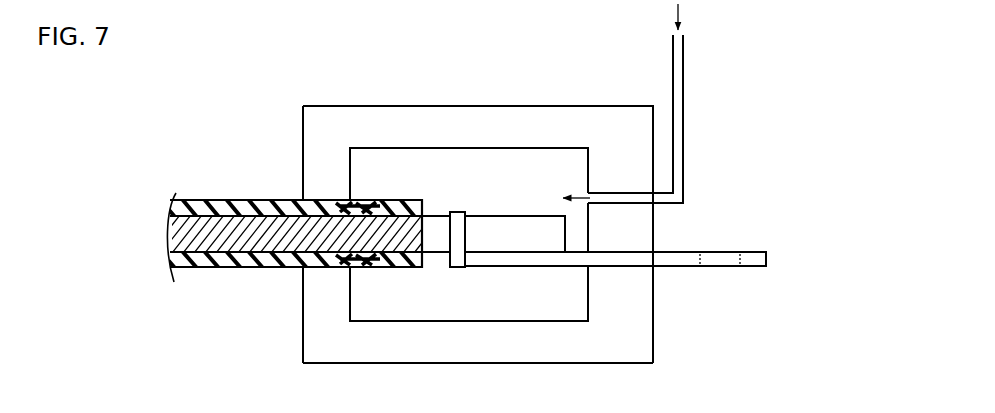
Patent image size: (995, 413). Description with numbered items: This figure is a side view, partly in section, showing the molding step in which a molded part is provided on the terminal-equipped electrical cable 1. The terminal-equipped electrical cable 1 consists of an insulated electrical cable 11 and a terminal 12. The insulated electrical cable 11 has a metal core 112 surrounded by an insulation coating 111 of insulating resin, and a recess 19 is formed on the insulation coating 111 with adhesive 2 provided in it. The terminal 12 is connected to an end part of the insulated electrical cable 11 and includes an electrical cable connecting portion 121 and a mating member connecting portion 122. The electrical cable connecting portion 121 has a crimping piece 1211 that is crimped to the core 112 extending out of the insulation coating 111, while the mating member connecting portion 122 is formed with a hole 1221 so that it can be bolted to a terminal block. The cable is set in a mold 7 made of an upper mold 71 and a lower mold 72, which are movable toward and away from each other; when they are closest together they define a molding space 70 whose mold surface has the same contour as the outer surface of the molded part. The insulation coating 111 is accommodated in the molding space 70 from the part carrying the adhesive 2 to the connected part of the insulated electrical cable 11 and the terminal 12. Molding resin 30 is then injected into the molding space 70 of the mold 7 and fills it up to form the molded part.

The terminal-equipped electrical cable 1 is at (168, 259).
The adhesive 2 is at (370, 268).
The mold 7 is at (302, 92).
The insulated electrical cable 11 is at (190, 195).
The terminal 12 is at (629, 293).
The recess 19 is at (360, 203).
The molding resin 30 is at (678, 117).
The molding space 70 is at (445, 165).
The upper mold 71 is at (303, 118).
The lower mold 72 is at (303, 350).
The insulation coating 111 is at (287, 171).
The core 112 is at (265, 203).
The electrical cable connecting portion 121 is at (548, 258).
The mating member connecting portion 122 is at (677, 262).
The crimping piece 1211 is at (482, 268).
The hole 1221 is at (712, 250).